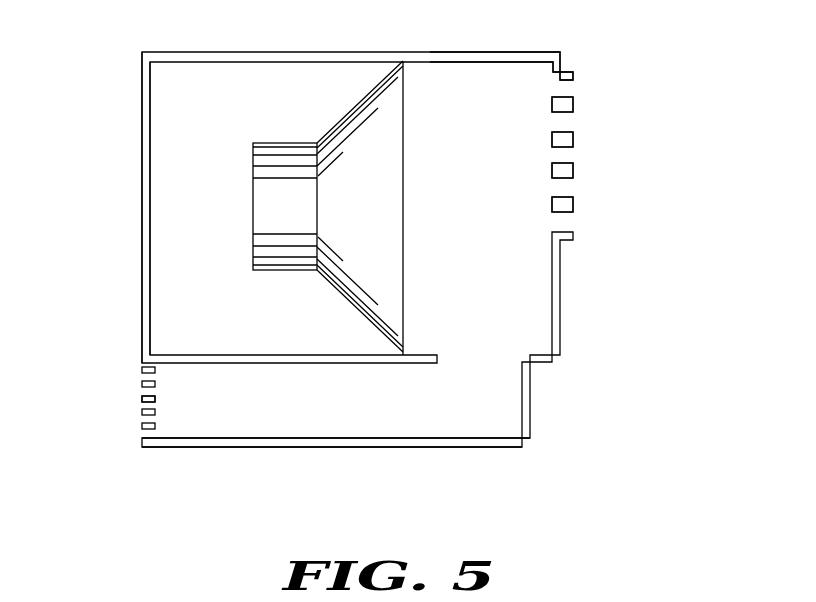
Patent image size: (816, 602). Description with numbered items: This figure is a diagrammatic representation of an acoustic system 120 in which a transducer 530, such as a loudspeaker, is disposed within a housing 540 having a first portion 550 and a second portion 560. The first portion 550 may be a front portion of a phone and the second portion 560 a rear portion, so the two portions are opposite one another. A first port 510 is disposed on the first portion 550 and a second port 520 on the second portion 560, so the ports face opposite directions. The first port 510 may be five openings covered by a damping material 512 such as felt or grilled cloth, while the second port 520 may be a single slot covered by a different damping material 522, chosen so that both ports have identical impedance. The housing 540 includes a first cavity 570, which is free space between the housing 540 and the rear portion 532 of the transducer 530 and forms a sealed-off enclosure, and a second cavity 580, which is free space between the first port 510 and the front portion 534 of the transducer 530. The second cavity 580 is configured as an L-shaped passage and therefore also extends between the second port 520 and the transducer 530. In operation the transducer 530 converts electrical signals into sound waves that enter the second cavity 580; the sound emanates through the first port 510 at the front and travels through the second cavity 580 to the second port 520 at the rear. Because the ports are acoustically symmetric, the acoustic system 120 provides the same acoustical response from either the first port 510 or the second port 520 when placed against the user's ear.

The acoustic system 120 is at (200, 527).
The first port 510 is at (647, 78).
The damping material 512 is at (563, 92).
The second port 520 is at (132, 362).
The damping material 522 is at (157, 400).
The transducer 530 is at (360, 102).
The rear portion of the transducer 532 is at (252, 156).
The front portion of the transducer 534 is at (405, 205).
The housing 540 is at (548, 460).
The first portion 550 is at (560, 303).
The second portion 560 is at (142, 205).
The first cavity 570 is at (199, 70).
The second cavity 580 is at (481, 70).